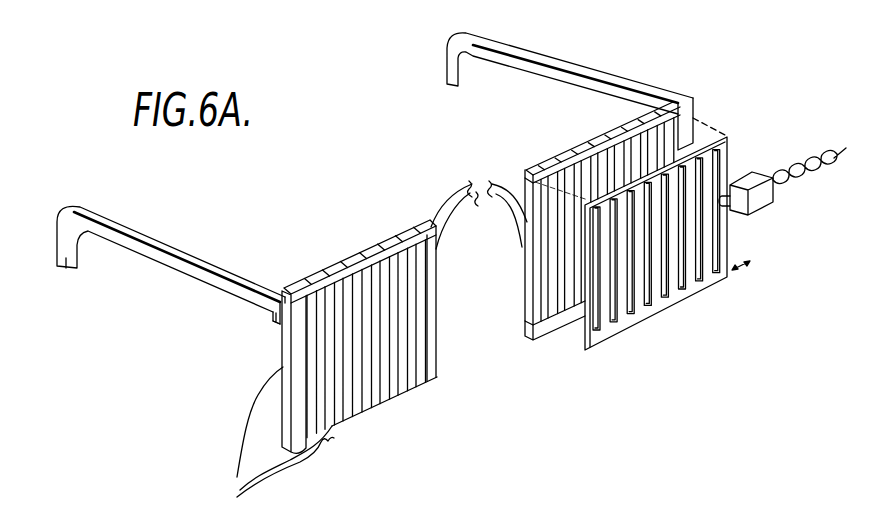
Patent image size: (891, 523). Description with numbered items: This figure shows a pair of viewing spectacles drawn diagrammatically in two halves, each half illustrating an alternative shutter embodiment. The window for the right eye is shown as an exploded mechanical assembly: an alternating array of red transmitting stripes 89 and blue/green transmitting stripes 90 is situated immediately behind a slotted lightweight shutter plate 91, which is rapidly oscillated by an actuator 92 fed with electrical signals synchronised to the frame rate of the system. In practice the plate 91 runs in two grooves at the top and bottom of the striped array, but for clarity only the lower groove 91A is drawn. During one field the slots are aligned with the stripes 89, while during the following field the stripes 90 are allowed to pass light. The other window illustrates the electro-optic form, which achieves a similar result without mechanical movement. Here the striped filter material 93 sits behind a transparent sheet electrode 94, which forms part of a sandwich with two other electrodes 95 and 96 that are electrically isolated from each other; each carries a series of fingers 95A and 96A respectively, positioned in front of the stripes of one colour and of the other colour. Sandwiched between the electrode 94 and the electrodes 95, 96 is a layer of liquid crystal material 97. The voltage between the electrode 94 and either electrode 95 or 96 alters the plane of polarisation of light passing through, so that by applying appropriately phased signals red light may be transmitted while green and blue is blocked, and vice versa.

The red transmitting stripes 89 is at (536, 171).
The blue/green transmitting stripes 90 is at (541, 168).
The slotted lightweight shutter plate 91 is at (727, 141).
The lower groove 91A is at (535, 330).
The actuator 92 is at (758, 202).
The striped filter material 93 is at (428, 226).
The transparent sheet electrode 94 is at (283, 362).
The electrode 95 is at (301, 303).
The fingers 95A is at (322, 326).
The electrode 96 is at (362, 412).
The fingers 96A is at (318, 392).
The layer of liquid crystal material 97 is at (352, 266).